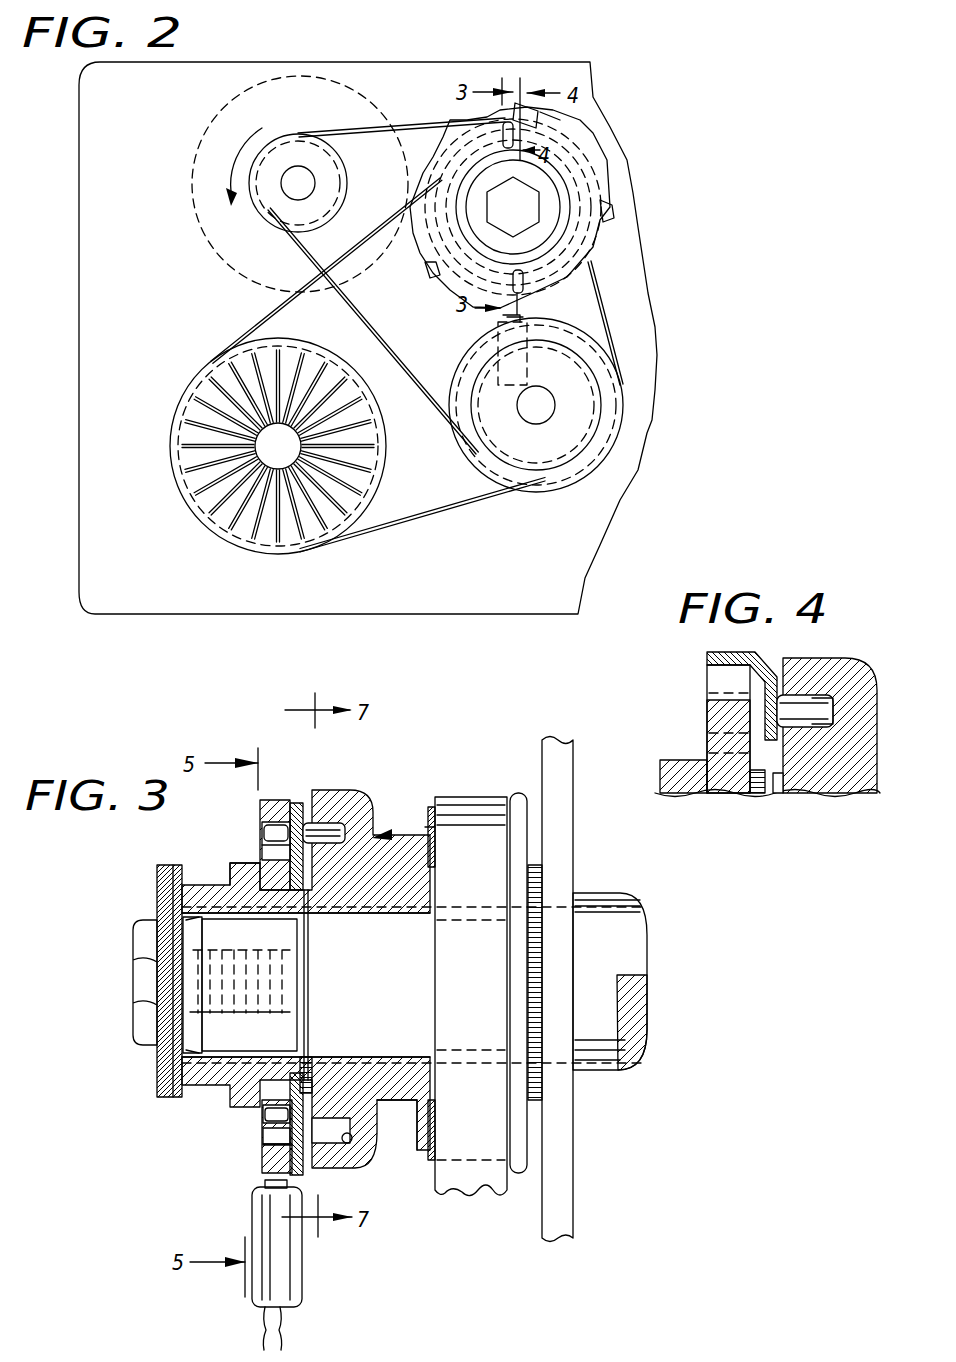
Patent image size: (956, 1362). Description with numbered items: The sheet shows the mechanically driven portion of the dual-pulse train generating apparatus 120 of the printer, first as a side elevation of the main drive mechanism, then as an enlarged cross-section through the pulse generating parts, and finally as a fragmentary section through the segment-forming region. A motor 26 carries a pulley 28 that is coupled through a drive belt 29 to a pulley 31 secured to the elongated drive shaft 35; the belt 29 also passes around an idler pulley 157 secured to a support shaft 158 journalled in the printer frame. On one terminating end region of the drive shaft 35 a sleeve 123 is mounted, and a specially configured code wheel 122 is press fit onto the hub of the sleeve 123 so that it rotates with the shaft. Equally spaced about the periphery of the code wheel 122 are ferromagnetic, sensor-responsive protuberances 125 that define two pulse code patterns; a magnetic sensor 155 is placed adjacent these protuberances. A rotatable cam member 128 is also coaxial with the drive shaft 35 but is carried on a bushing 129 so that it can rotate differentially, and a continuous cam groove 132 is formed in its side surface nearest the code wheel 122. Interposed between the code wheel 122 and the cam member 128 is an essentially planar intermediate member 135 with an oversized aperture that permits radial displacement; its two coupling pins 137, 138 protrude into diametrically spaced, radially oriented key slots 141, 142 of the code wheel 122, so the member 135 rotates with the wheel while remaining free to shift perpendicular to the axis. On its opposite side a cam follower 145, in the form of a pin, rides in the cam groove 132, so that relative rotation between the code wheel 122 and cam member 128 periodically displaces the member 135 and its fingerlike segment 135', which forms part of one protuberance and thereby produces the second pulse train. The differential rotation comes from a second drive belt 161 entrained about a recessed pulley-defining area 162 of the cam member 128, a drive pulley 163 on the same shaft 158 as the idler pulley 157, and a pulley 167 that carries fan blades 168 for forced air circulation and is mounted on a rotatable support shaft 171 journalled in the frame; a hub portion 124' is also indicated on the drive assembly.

In FIG. 2, the motor 26 is at (222, 108).
In FIG. 2, the pulley 28 is at (272, 213).
In FIG. 2, the drive belt 29 is at (368, 132).
In FIG. 3, the drive belt 29 is at (478, 797).
In FIG. 3, the pulley 31 is at (428, 807).
In FIG. 2, the drive shaft 35 is at (505, 197).
In FIG. 3, the drive shaft 35 is at (193, 975).
In FIG. 2, the dual-pulse train generating apparatus 120 is at (390, 99).
In FIG. 3, the dual-pulse train generating apparatus 120 is at (110, 899).
In FIG. 2, the code wheel 122 is at (587, 170).
In FIG. 3, the code wheel 122 is at (262, 815).
In FIG. 4, the code wheel 122 is at (707, 710).
In FIG. 3, the sleeve 123 is at (230, 872).
In FIG. 3, the hub portion 124' is at (442, 776).
In FIG. 2, the magnetic sensor-responsive protuberances 125 is at (432, 275).
In FIG. 3, the magnetic sensor-responsive protuberances 125 is at (262, 1170).
In FIG. 3, the rotatable cam member 128 is at (340, 792).
In FIG. 4, the rotatable cam member 128 is at (843, 667).
In FIG. 3, the bushing 129 is at (340, 905).
In FIG. 3, the cam groove 132 is at (345, 825).
In FIG. 4, the cam groove 132 is at (830, 720).
In FIG. 3, the intermediate member 135 is at (316, 982).
In FIG. 4, the intermediate member 135 is at (741, 802).
In FIG. 2, the segment 135' is at (594, 105).
In FIG. 4, the segment 135' is at (714, 687).
In FIG. 2, the coupling pin 137 is at (505, 122).
In FIG. 3, the coupling pin 137 is at (262, 832).
In FIG. 4, the coupling pin 137 is at (713, 733).
In FIG. 2, the coupling pin 138 is at (520, 268).
In FIG. 3, the coupling pin 138 is at (263, 1113).
In FIG. 2, the key slot 141 is at (503, 140).
In FIG. 3, the key slot 141 is at (262, 852).
In FIG. 2, the key slot 142 is at (512, 288).
In FIG. 3, the key slot 142 is at (263, 1136).
In FIG. 3, the cam follower 145 is at (320, 823).
In FIG. 4, the cam follower 145 is at (823, 710).
In FIG. 2, the sensor 155 is at (500, 342).
In FIG. 3, the sensor 155 is at (258, 1220).
In FIG. 2, the idler pulley 157 is at (583, 470).
In FIG. 2, the support shaft 158 is at (538, 418).
In FIG. 2, the second drive belt 161 is at (440, 510).
In FIG. 3, the second drive belt 161 is at (410, 825).
In FIG. 3, the recessed pulley-defining area 162 is at (407, 1142).
In FIG. 2, the drive pulley 163 is at (590, 415).
In FIG. 2, the pulley 167 is at (172, 463).
In FIG. 2, the fan blades 168 is at (217, 392).
In FIG. 2, the rotatable support shaft 171 is at (295, 446).